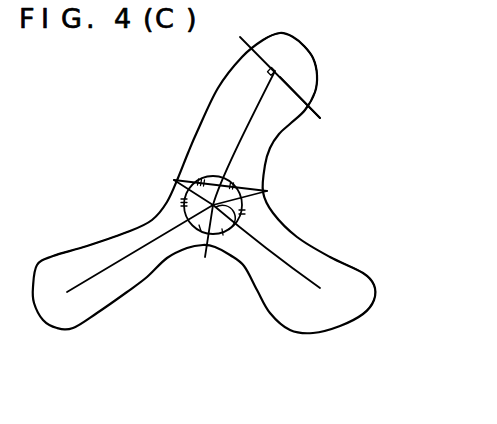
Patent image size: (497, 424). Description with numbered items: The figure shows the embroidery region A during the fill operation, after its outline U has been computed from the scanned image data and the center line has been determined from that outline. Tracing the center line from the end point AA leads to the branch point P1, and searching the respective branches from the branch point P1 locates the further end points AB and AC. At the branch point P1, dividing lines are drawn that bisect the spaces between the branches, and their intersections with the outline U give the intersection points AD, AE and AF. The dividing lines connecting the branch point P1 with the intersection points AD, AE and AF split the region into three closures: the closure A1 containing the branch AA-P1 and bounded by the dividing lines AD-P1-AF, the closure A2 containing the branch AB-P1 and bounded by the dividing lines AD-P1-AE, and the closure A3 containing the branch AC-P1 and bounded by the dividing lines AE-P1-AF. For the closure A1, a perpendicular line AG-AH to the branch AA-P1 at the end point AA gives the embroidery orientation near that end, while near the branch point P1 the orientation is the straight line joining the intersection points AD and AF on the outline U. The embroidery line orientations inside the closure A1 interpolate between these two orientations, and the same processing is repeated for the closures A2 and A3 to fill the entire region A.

The embroidery region A is at (377, 318).
The closure A1 is at (307, 77).
The closure A2 is at (352, 278).
The closure A3 is at (90, 298).
The end point AA is at (257, 125).
The end point AB is at (281, 258).
The end point AC is at (131, 263).
The intersection point AD is at (255, 190).
The intersection point AE is at (200, 246).
The intersection point AF is at (180, 178).
The perpendicular line end point AG is at (267, 66).
The perpendicular line end point AH is at (314, 110).
The outline U is at (312, 57).
The branch point P1 is at (213, 205).